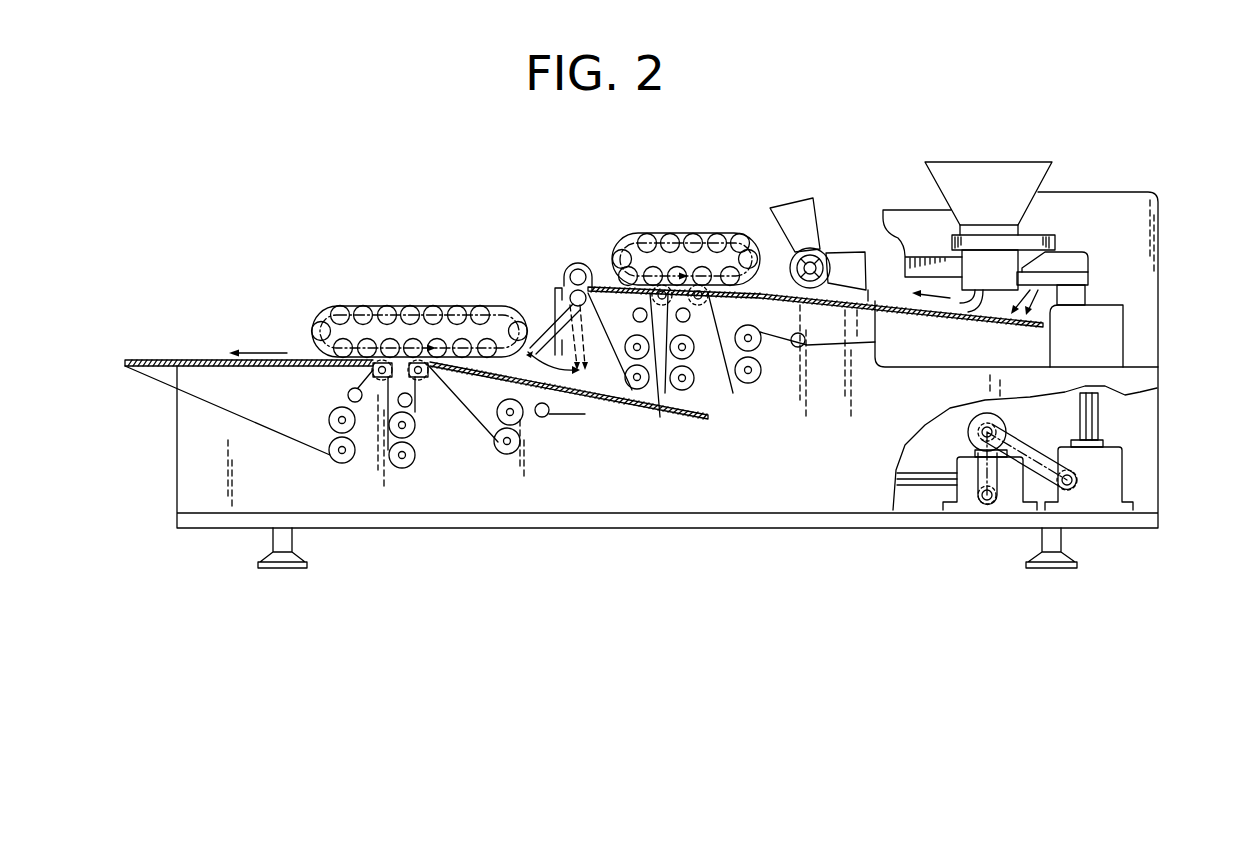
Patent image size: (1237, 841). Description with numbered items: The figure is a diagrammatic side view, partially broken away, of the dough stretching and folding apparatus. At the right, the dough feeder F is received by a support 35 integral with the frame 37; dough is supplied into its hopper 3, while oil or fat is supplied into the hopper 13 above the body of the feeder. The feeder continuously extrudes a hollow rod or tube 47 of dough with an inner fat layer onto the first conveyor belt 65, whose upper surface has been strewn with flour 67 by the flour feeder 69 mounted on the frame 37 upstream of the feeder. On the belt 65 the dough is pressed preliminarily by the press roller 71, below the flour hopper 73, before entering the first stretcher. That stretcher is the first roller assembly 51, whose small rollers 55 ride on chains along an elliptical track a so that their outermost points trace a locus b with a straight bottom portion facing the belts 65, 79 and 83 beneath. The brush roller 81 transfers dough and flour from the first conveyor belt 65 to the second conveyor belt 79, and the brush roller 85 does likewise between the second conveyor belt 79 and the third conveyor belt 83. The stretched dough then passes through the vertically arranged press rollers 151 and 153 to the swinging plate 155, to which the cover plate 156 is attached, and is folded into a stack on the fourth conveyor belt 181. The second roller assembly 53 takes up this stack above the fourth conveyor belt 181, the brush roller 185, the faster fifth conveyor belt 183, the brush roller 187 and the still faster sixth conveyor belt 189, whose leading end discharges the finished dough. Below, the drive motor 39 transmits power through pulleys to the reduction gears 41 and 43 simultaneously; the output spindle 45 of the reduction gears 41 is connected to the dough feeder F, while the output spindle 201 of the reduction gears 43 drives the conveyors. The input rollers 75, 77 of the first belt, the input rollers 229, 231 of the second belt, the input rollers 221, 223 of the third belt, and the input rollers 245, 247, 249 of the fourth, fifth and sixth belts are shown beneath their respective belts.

The hopper 3 is at (905, 222).
The hopper 13 is at (962, 172).
The support 35 is at (1003, 245).
The frame 37 is at (1158, 255).
The drive motor 39 is at (1003, 425).
The reduction gears 41 is at (1090, 500).
The reduction gears 43 is at (968, 500).
The output spindle 45 is at (1098, 415).
The hollow rod or tube 47 is at (975, 314).
The first roller assembly 51 is at (666, 224).
The roller assembly 53 is at (393, 298).
The small rollers 55 is at (338, 306).
The first conveyor belt 65 is at (806, 347).
The flour 67 is at (1055, 316).
The flour feeder 69 is at (1072, 262).
The press roller 71 is at (818, 258).
The flour hopper 73 is at (800, 212).
The input roller 75 is at (749, 383).
The input roller 77 is at (752, 336).
The second conveyor belt 79 is at (694, 349).
The brush roller 81 is at (710, 297).
The third conveyor belt 83 is at (603, 345).
The brush roller 85 is at (652, 296).
The press roller 151 is at (570, 293).
The press roller 153 is at (579, 268).
The swinging plate 155 is at (553, 305).
The cover plate 156 is at (548, 312).
The fourth conveyor belt 181 is at (466, 412).
The fifth conveyor belt 183 is at (392, 432).
The brush roller 185 is at (420, 380).
The brush roller 187 is at (378, 371).
The sixth conveyor belt 189 is at (207, 402).
The output spindle 201 is at (913, 482).
The input roller 221 is at (634, 388).
The input roller 223 is at (656, 410).
The input roller 229 is at (682, 389).
The input roller 231 is at (688, 372).
The input roller 245 is at (520, 442).
The input roller 247 is at (400, 460).
The input roller 249 is at (330, 458).
The dough feeder F is at (1056, 183).
The elliptical track a is at (468, 305).
The locus b is at (438, 305).